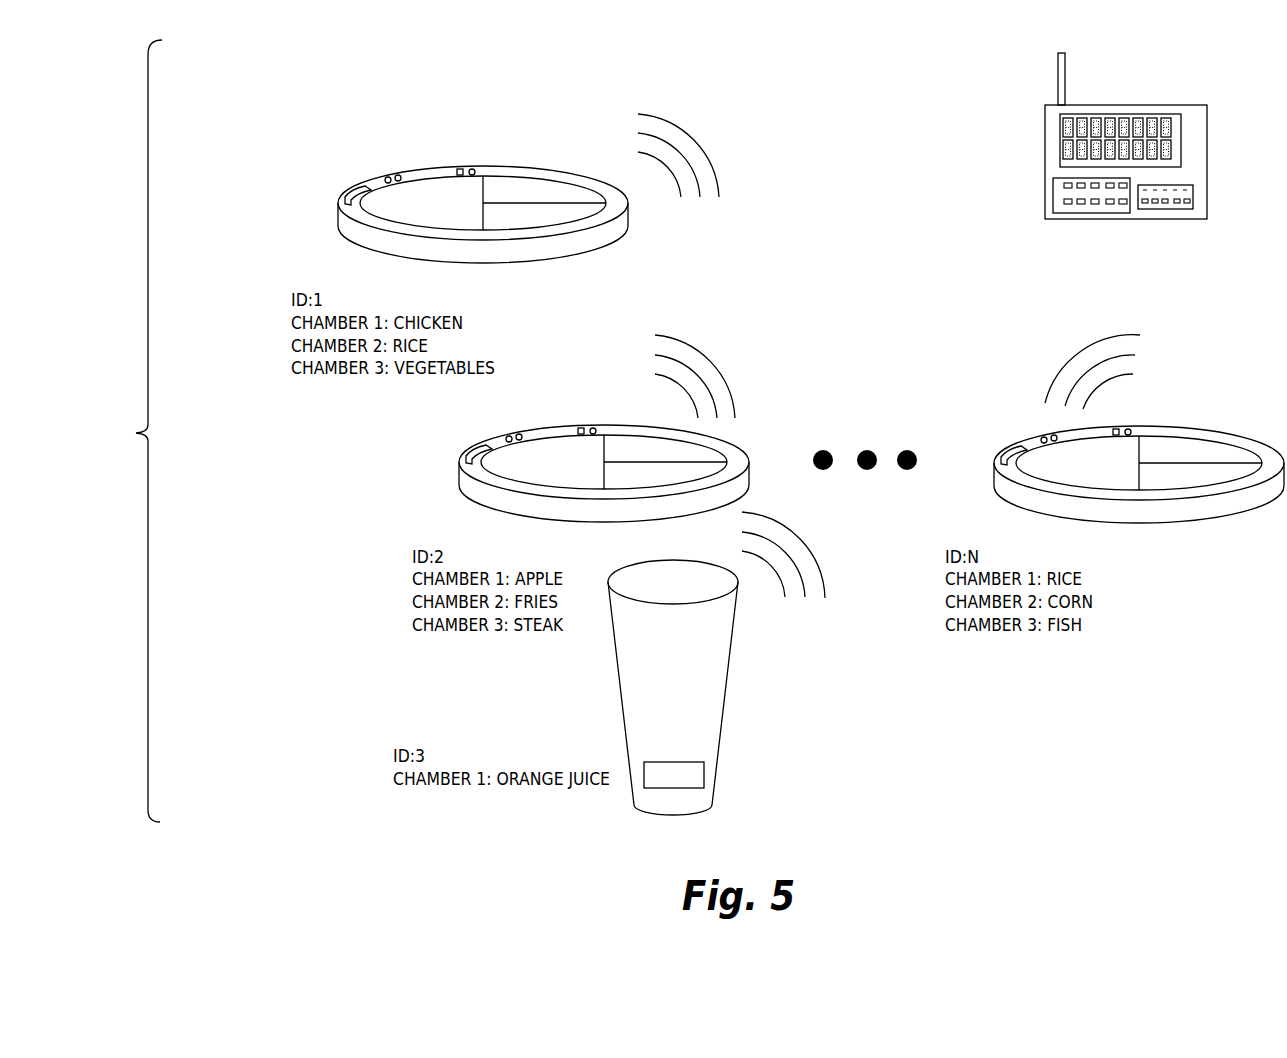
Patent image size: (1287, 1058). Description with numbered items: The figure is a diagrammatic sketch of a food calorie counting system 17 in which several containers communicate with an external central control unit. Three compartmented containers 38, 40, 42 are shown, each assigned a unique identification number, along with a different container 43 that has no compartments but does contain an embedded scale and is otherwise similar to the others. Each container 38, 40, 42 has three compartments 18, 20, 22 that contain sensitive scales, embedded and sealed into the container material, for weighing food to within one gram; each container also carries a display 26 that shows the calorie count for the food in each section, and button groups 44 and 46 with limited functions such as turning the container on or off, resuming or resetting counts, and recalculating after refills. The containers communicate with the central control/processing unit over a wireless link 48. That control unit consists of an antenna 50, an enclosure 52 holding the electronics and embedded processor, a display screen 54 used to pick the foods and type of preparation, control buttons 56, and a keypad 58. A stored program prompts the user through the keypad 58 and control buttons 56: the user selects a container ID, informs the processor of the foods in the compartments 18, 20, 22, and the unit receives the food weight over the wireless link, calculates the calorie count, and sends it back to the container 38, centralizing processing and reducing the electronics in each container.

The system 17 is at (291, 91).
The compartment 18 is at (544, 190).
The compartment 20 is at (544, 216).
The compartment 22 is at (421, 203).
The display 26 is at (353, 190).
The container 38 is at (340, 228).
The container 40 is at (462, 490).
The container 42 is at (996, 488).
The container 43 is at (725, 707).
The button group 44 is at (392, 177).
The button group 46 is at (465, 168).
The wireless link 48 is at (690, 140).
The antenna 50 is at (1058, 78).
The enclosure 52 is at (1207, 151).
The display screen 54 is at (1062, 152).
The control buttons 56 is at (1053, 195).
The keypad 58 is at (1168, 205).